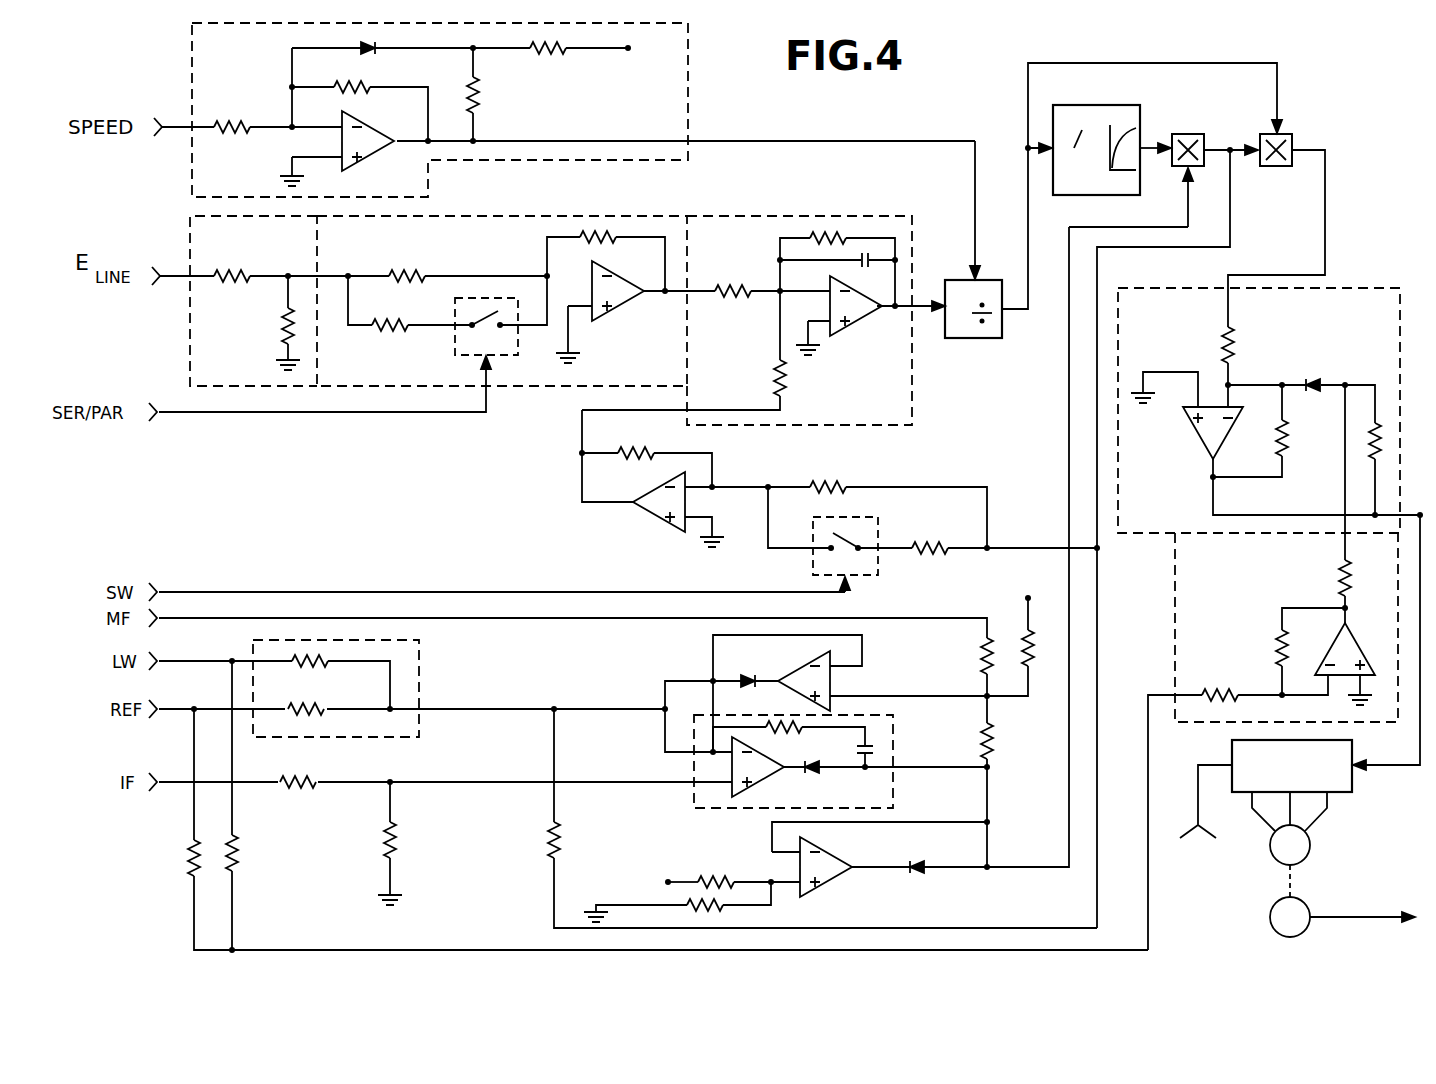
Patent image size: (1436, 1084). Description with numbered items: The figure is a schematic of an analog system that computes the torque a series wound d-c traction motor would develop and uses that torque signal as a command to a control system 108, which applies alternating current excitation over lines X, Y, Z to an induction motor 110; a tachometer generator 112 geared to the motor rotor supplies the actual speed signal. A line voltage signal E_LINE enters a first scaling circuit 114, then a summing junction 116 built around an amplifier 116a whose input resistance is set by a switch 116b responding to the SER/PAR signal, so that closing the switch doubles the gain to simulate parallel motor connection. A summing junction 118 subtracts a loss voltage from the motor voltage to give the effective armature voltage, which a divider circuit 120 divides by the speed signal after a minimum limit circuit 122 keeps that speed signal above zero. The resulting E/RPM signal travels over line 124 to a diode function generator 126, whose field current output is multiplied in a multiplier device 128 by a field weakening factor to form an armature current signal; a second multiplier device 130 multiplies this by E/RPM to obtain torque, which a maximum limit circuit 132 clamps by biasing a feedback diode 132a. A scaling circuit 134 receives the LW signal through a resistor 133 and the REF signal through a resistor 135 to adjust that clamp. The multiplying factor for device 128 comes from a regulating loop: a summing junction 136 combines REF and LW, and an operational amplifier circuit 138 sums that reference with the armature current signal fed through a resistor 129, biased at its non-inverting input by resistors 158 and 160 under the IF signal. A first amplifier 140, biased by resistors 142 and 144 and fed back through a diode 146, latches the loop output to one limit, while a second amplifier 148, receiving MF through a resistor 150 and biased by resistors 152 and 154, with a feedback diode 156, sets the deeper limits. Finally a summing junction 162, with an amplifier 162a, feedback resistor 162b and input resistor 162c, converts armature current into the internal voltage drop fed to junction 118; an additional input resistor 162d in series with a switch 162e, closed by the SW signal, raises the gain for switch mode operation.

The control system 108 is at (1352, 786).
The alternating current induction motor 110 is at (1311, 849).
The tachometer generator 112 is at (1309, 904).
The first scaling circuit 114 is at (190, 216).
The summing junction 116 is at (516, 286).
The amplifier 116a is at (650, 360).
The switch 116b is at (455, 342).
The summing junction 118 is at (738, 216).
The divider circuit 120 is at (960, 340).
The minimum limit circuit 122 is at (248, 72).
The line 124 is at (1030, 316).
The diode function generator 126 is at (1113, 104).
The multiplier device 128 is at (1197, 120).
The second multiplier device 130 is at (1312, 119).
The maximum limit circuit 132 is at (1270, 403).
The feedback diode 132a is at (1325, 364).
The scaling circuit 134 is at (1175, 590).
The resistor 135 is at (184, 858).
The resistor 133 is at (240, 854).
The summing junction 136 is at (363, 698).
The operational amplifier circuit 138 is at (830, 760).
The first amplifier 140 is at (846, 883).
The resistor 142 is at (728, 874).
The resistor 144 is at (726, 915).
The diode 146 is at (921, 878).
The second amplifier 148 is at (802, 669).
The resistor 150 is at (982, 656).
The resistor 152 is at (1023, 628).
The resistor 154 is at (992, 744).
The diode 156 is at (744, 690).
The resistor 158 is at (304, 779).
The resistor 160 is at (402, 842).
The resistor 129 is at (549, 850).
The summing junction 162 is at (839, 501).
The amplifier 162a is at (652, 517).
The feedback resistor 162b is at (634, 449).
The input resistor 162c is at (840, 478).
The additional input resistor 162d is at (936, 538).
The switch 162e is at (811, 563).